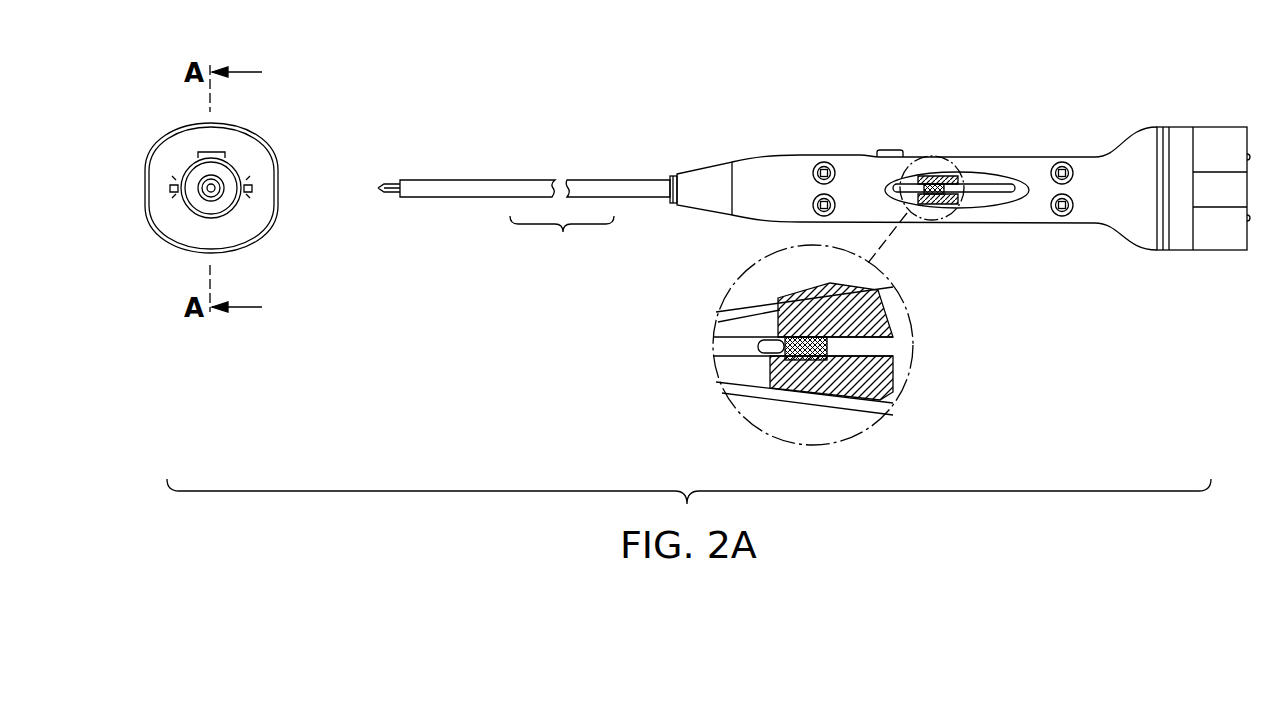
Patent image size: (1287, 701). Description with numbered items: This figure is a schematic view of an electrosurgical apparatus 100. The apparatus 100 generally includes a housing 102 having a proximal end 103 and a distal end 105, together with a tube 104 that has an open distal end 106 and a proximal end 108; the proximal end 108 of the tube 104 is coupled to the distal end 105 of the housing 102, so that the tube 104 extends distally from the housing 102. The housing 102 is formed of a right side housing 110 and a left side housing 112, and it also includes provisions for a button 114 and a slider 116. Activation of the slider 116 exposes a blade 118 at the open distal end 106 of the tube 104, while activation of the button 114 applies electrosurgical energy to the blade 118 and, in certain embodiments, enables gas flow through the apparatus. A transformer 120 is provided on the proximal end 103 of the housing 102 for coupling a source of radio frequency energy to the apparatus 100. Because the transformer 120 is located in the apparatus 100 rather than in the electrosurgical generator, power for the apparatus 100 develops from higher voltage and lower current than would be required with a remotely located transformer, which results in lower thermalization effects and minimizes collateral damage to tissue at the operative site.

The electrosurgical apparatus 100 is at (801, 268).
The housing 102 is at (1006, 163).
The proximal end 103 is at (1140, 145).
The tube 104 is at (490, 198).
The distal end 105 is at (694, 208).
The open distal end 106 is at (412, 180).
The proximal end 108 is at (651, 168).
The right side housing 110 is at (160, 163).
The left side housing 112 is at (268, 130).
The button 114 is at (878, 152).
The slider 116 is at (919, 176).
The blade 118 is at (384, 195).
The transformer 120 is at (1217, 248).